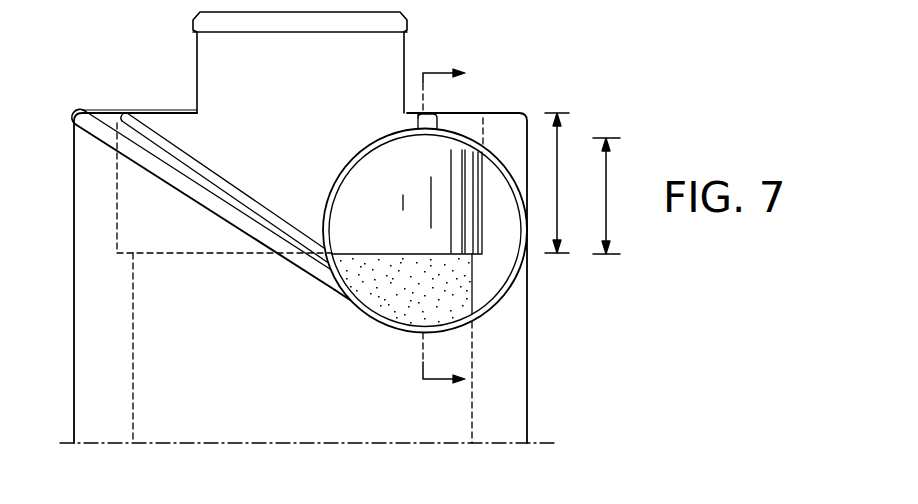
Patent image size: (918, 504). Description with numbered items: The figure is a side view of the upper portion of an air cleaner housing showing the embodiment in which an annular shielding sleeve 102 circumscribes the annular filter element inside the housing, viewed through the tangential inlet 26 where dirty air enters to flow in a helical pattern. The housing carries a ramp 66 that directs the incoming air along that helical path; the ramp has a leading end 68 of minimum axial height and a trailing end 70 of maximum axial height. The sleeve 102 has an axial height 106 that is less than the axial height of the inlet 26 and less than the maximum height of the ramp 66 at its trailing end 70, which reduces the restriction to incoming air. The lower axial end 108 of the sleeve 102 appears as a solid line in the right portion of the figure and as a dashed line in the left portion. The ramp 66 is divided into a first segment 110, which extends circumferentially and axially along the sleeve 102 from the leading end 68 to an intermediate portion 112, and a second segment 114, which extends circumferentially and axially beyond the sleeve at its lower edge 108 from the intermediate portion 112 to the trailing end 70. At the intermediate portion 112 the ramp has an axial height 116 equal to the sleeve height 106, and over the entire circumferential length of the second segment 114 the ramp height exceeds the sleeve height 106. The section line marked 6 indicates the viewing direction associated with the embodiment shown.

The section line 6- 6 is at (442, 244).
The tangential inlet 26 is at (511, 262).
The ramp 66 is at (205, 215).
The leading end 68 is at (128, 134).
The trailing end 70 is at (332, 287).
The annular shielding sleeve 102 is at (390, 148).
The axial height 106 is at (607, 163).
The lower axial end 108 is at (408, 253).
The first segment 110 is at (162, 163).
The intermediate portion 112 is at (293, 247).
The second segment 114 is at (307, 263).
The axial height 116 is at (558, 150).